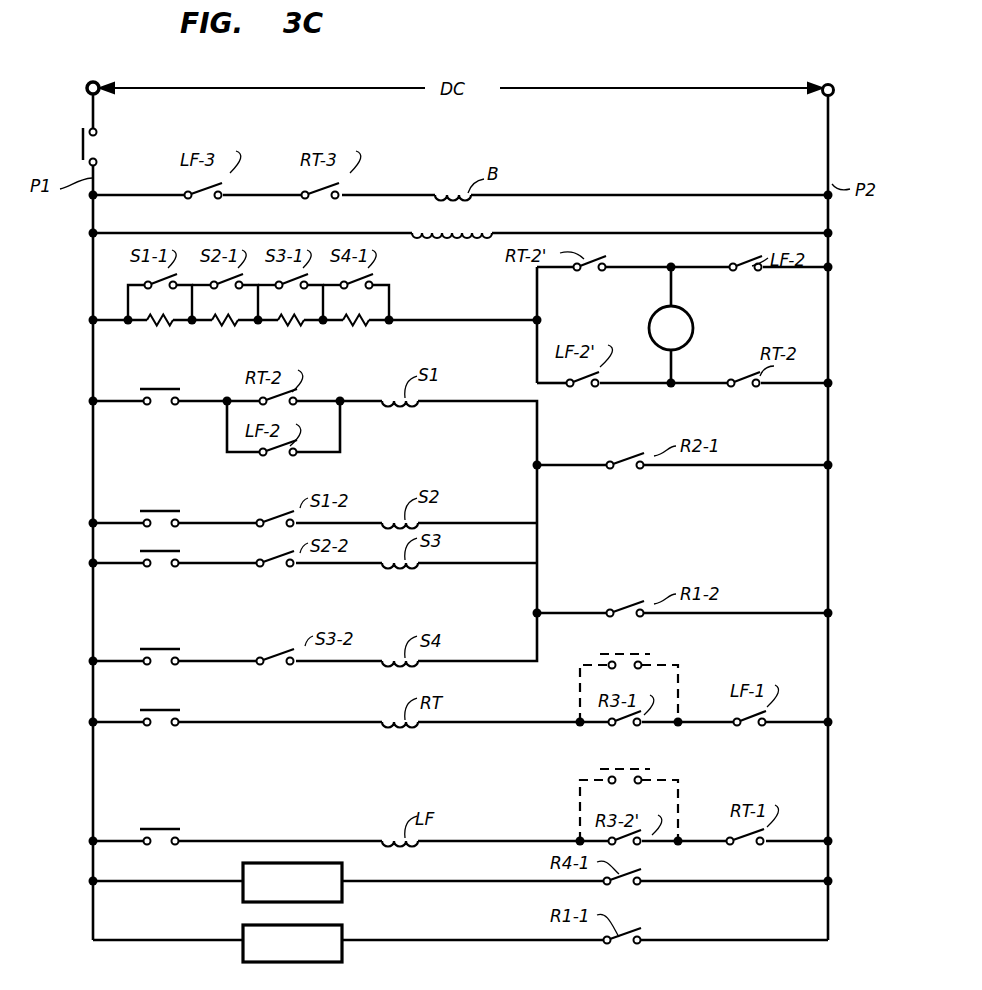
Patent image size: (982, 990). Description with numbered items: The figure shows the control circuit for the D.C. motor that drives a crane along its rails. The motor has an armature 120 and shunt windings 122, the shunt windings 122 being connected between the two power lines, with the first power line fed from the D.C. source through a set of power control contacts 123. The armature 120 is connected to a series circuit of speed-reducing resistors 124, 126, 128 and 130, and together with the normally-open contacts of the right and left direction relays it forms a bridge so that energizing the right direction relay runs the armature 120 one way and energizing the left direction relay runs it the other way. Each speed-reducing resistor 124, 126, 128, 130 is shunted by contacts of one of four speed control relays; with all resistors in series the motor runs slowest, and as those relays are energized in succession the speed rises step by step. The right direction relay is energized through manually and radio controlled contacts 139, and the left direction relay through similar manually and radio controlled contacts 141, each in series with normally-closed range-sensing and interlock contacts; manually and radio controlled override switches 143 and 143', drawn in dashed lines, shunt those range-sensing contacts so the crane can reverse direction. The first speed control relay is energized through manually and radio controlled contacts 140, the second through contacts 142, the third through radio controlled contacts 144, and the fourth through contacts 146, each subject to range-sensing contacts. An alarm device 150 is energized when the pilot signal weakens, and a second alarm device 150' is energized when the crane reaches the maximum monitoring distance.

The power control contacts 123 is at (84, 124).
The shunt windings 122 is at (470, 237).
The speed-reducing resistor 124 is at (168, 298).
The speed-reducing resistor 126 is at (232, 298).
The speed-reducing resistor 128 is at (297, 298).
The speed-reducing resistor 130 is at (362, 298).
The armature 120 is at (693, 327).
The manually and radio controlled contacts 140 is at (154, 384).
The manually and radio controlled contacts 142 is at (154, 504).
The radio controlled contacts 144 is at (142, 546).
The manually and radio controlled contacts 146 is at (147, 644).
The manually and radio controlled contacts 139 is at (144, 704).
The manually and radio controlled contacts 141 is at (146, 820).
The manually and radio controlled override switch 143 is at (642, 678).
The manually and radio controlled override switch 143' is at (644, 796).
The alarm device 150 is at (320, 890).
The alarm device 150' is at (322, 953).